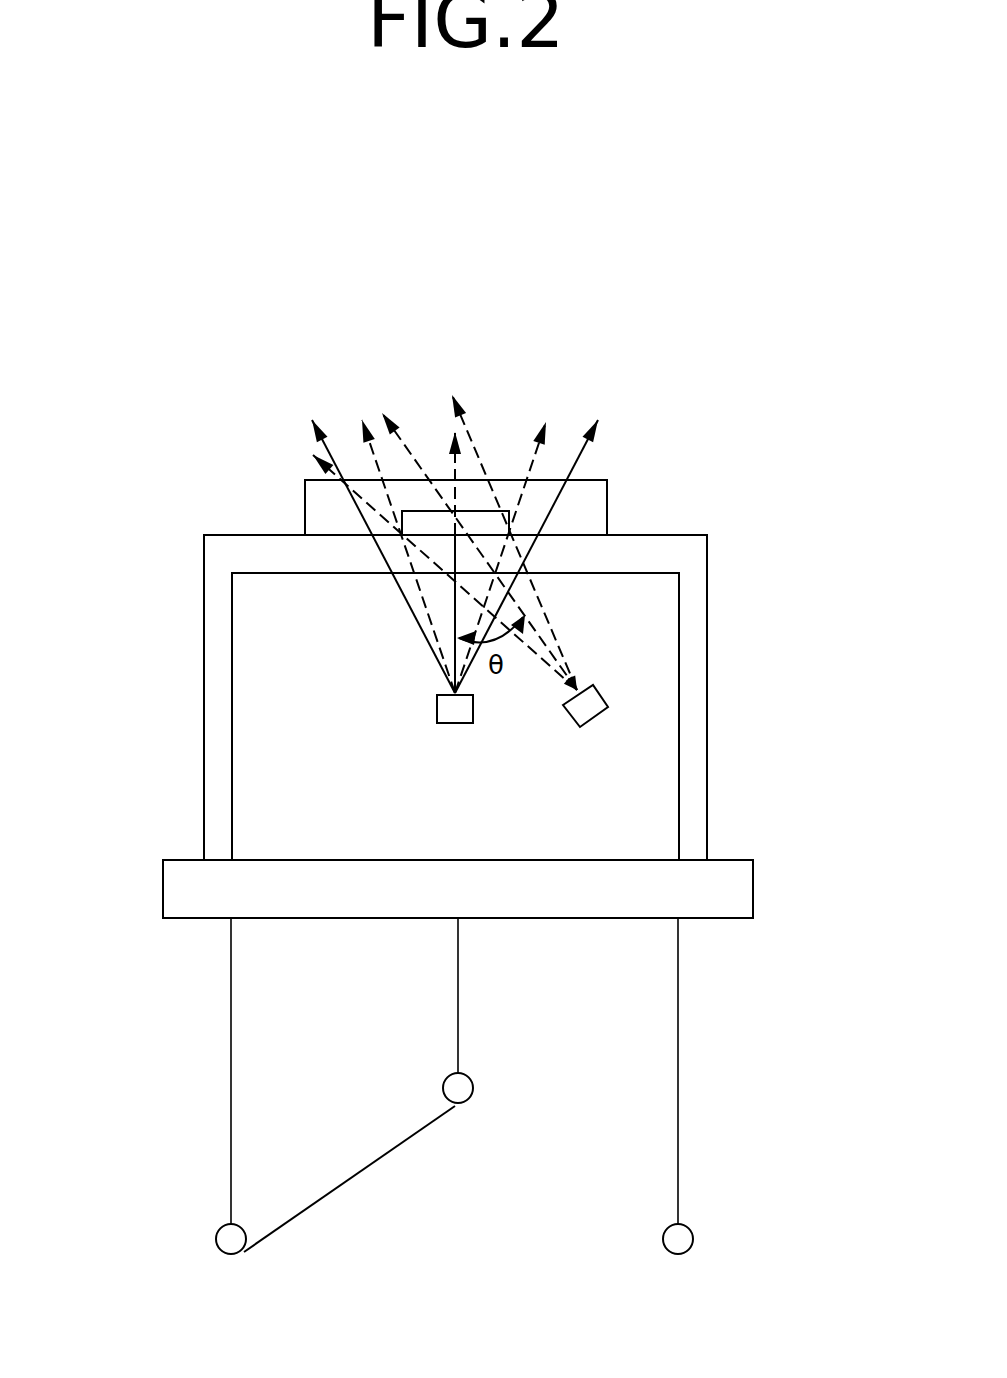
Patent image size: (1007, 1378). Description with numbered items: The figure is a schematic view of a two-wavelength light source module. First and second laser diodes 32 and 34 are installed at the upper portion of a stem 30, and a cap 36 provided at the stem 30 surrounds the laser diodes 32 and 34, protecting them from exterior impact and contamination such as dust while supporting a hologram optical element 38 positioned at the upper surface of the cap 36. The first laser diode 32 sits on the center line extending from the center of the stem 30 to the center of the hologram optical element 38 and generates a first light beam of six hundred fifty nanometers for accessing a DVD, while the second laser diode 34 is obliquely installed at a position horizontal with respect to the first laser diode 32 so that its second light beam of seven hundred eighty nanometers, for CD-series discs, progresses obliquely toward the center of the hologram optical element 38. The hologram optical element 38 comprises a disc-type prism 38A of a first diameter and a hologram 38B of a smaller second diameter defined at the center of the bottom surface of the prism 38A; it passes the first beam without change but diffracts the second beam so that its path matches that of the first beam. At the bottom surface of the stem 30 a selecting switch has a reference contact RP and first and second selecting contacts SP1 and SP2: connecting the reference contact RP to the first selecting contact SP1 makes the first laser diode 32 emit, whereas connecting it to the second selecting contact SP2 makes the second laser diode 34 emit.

The stem 30 is at (742, 898).
The first laser diode 32 is at (451, 723).
The second laser diode 34 is at (579, 727).
The cap 36 is at (698, 683).
The hologram optical element 38 is at (571, 402).
The disc-type prism 38A is at (607, 490).
The hologram 38B is at (480, 511).
The reference contact RP is at (473, 1080).
The first selecting contact SP1 is at (217, 1245).
The second selecting contact SP2 is at (690, 1230).